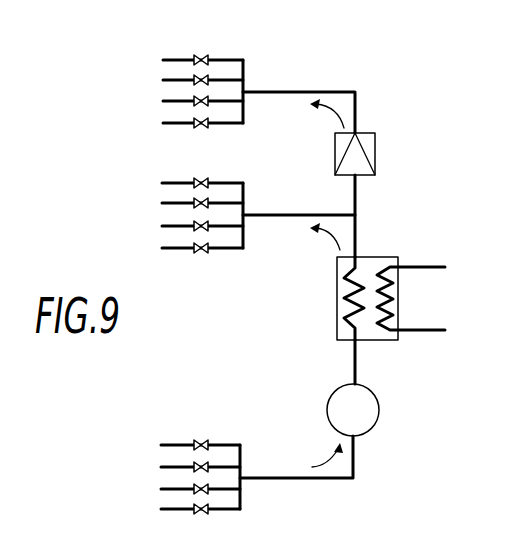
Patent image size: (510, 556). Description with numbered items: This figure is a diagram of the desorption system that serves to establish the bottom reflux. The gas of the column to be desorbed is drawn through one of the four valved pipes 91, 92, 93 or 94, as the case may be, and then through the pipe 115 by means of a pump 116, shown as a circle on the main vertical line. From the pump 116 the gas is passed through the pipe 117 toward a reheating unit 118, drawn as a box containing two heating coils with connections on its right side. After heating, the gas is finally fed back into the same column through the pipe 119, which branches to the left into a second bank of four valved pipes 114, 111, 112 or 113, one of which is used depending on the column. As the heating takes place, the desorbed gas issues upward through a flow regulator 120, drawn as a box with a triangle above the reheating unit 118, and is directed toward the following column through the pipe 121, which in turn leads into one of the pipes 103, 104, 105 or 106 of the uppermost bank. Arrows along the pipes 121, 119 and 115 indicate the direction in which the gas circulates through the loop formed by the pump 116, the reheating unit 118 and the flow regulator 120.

The pipe 91 is at (170, 509).
The pipe 92 is at (170, 489).
The pipe 93 is at (168, 466).
The pipe 94 is at (172, 445).
The pipe 103 is at (168, 122).
The pipe 104 is at (168, 102).
The pipe 105 is at (166, 79).
The pipe 106 is at (168, 58).
The pipe 111 is at (170, 226).
The pipe 112 is at (170, 203).
The pipe 113 is at (166, 182).
The pipe 114 is at (168, 250).
The pipe 115 is at (356, 453).
The pump 116 is at (338, 393).
The pipe 117 is at (357, 356).
The reheating unit 118 is at (398, 295).
The pipe 119 is at (270, 218).
The flow regulator 120 is at (372, 137).
The pipe 121 is at (285, 90).